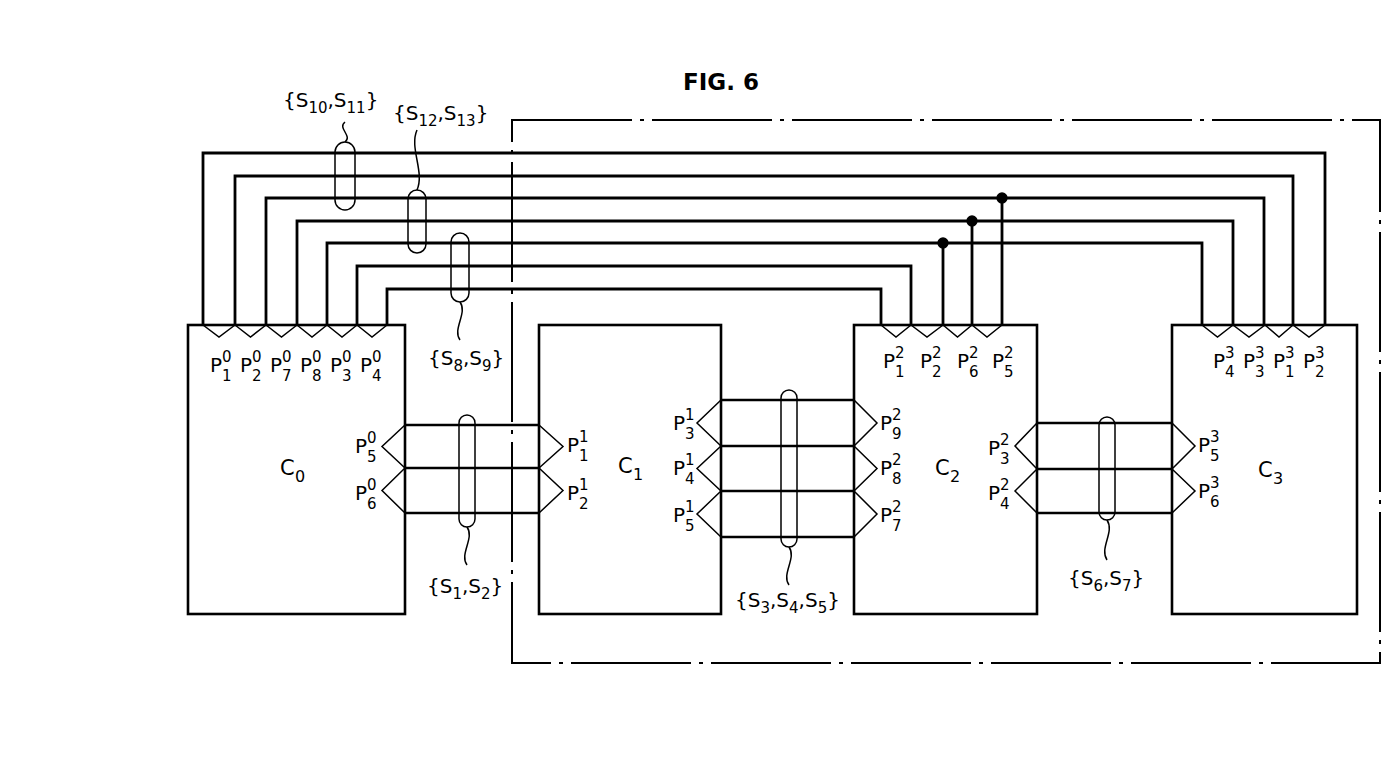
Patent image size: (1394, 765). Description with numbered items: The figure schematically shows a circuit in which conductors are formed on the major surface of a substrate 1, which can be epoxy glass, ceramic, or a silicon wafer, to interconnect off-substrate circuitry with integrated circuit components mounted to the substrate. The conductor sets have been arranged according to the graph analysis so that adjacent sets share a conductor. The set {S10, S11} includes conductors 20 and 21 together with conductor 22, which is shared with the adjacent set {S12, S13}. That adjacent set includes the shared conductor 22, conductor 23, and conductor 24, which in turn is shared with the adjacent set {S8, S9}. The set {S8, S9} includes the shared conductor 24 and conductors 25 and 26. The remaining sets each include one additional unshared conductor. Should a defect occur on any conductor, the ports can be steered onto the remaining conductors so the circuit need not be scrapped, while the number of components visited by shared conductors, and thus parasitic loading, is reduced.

The substrate 1 is at (530, 124).
The conductor 20 is at (764, 228).
The conductor 21 is at (764, 240).
The shared conductor 22 is at (765, 251).
The conductor 23 is at (765, 262).
The shared conductor 24 is at (764, 273).
The conductor 25 is at (634, 285).
The conductor 26 is at (634, 296).